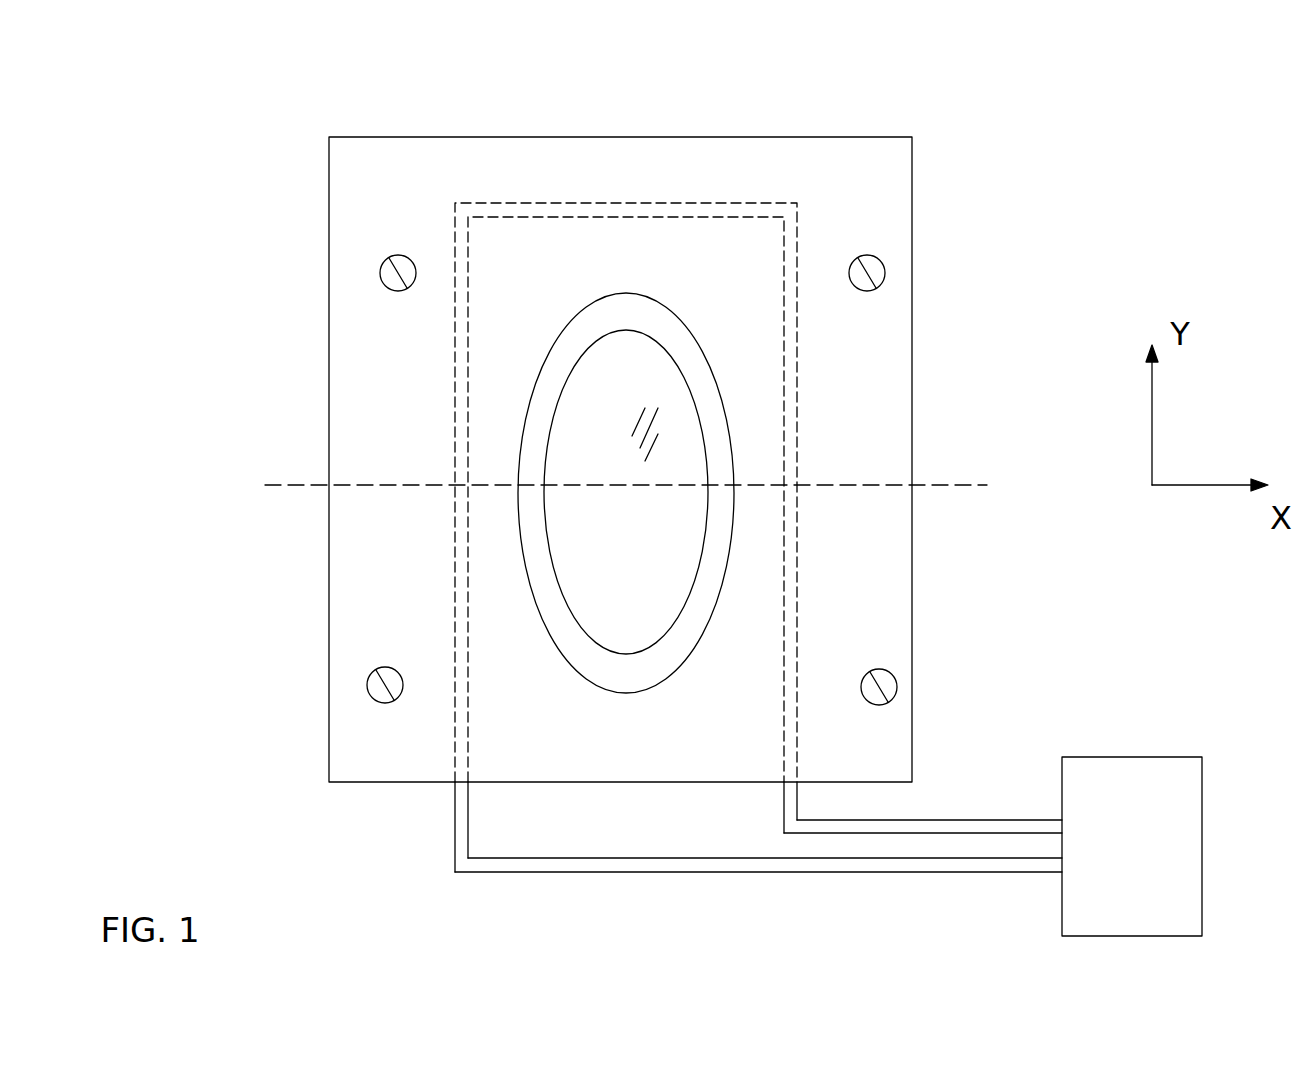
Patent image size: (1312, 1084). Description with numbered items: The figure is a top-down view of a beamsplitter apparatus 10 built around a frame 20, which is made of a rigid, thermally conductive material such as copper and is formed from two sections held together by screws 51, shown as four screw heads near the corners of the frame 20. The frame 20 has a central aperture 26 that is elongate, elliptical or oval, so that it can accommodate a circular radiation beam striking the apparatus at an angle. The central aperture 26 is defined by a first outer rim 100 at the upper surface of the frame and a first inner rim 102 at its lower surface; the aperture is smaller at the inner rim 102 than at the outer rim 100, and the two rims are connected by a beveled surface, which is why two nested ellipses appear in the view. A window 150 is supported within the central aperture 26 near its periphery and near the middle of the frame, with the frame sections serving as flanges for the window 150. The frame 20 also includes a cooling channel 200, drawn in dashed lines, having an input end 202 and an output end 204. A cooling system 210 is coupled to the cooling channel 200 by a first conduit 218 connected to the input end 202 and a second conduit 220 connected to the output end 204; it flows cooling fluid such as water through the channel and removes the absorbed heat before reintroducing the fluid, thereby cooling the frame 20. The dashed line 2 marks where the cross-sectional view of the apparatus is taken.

The beamsplitter apparatus 10 is at (1085, 143).
The frame 20 is at (941, 293).
The screws 51 is at (380, 270).
The central aperture 26 is at (627, 484).
The first outer rim 100 is at (645, 293).
The first inner rim 102 is at (619, 654).
The window 150 is at (612, 558).
The cooling channel 200 is at (798, 395).
The input end 202 is at (452, 767).
The output end 204 is at (783, 765).
The cooling system 210 is at (1104, 854).
The first conduit 218 is at (898, 873).
The second conduit 220 is at (950, 820).
The section line 2— 2 is at (265, 485).